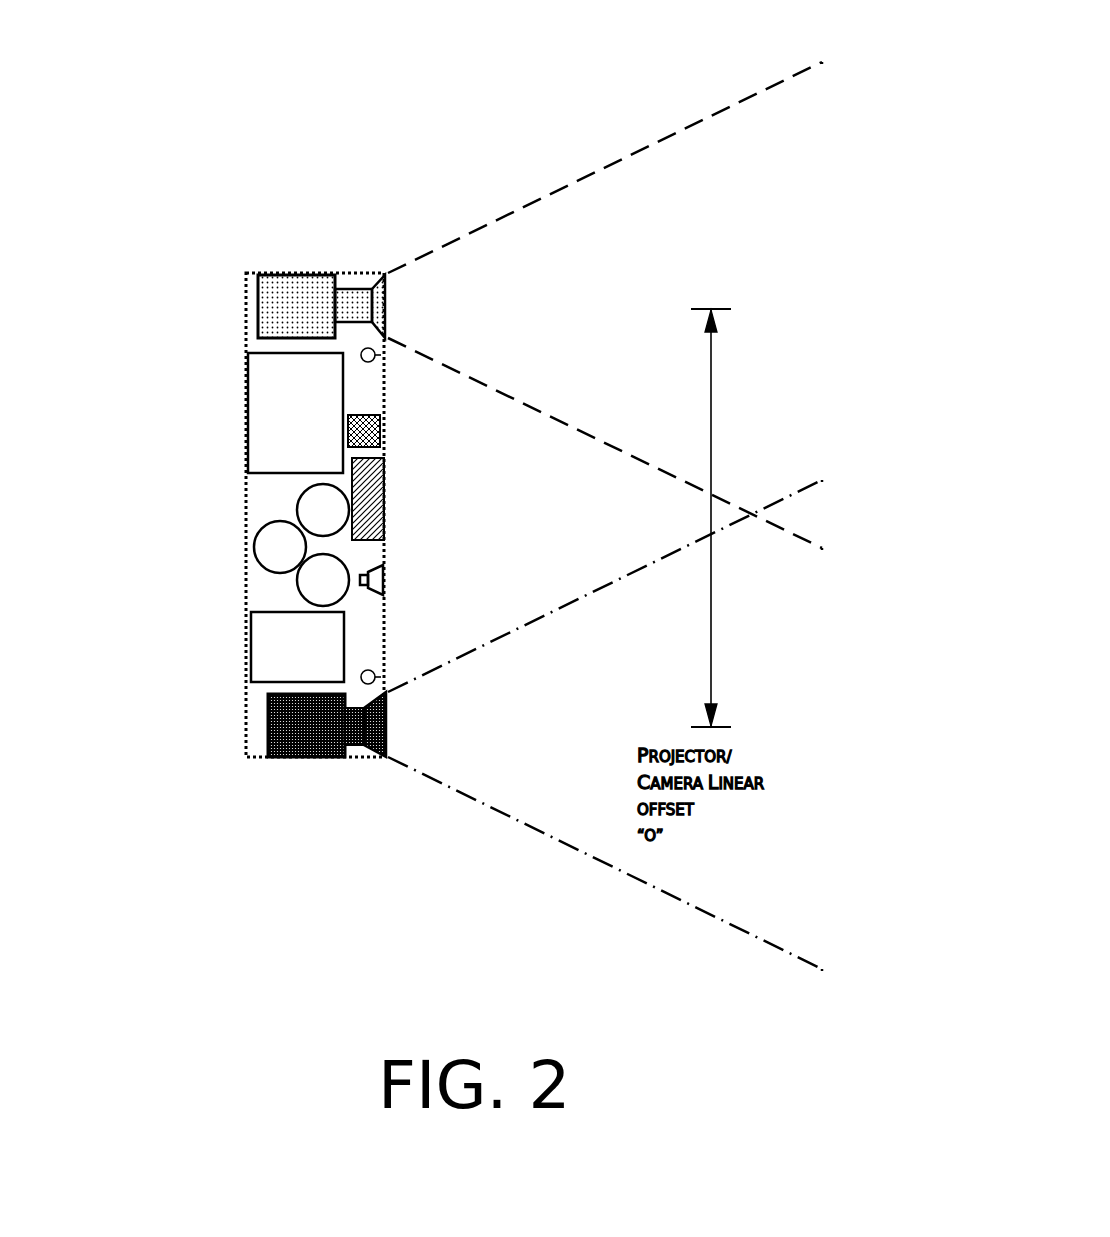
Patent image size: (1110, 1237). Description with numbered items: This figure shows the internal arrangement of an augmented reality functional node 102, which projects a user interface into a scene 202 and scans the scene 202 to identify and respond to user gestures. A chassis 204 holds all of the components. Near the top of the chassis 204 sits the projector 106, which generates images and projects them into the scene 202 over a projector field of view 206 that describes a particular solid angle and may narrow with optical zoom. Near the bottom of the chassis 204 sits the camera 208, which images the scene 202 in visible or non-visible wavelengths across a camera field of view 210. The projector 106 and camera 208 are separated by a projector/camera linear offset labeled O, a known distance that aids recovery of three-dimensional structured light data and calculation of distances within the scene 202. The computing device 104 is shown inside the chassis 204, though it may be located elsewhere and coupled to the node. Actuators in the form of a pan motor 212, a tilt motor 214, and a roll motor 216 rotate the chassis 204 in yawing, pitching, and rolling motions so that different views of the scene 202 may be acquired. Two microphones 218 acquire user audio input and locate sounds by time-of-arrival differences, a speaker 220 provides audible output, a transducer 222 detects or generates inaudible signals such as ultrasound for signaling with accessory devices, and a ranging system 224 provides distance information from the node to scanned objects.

The augmented reality functional node 102 is at (282, 272).
The computing device 104 is at (296, 410).
The projector 106 is at (295, 310).
The scene 202 is at (841, 516).
The chassis 204 is at (313, 270).
The projector field of view 206 is at (603, 163).
The camera 208 is at (268, 757).
The camera field of view 210 is at (553, 845).
The pan motor 212 is at (297, 513).
The tilt motor 214 is at (256, 560).
The roll motor 216 is at (298, 585).
The microphone 218 is at (372, 352).
The speaker 220 is at (385, 576).
The transducer 222 is at (380, 418).
The ranging system 224 is at (384, 492).